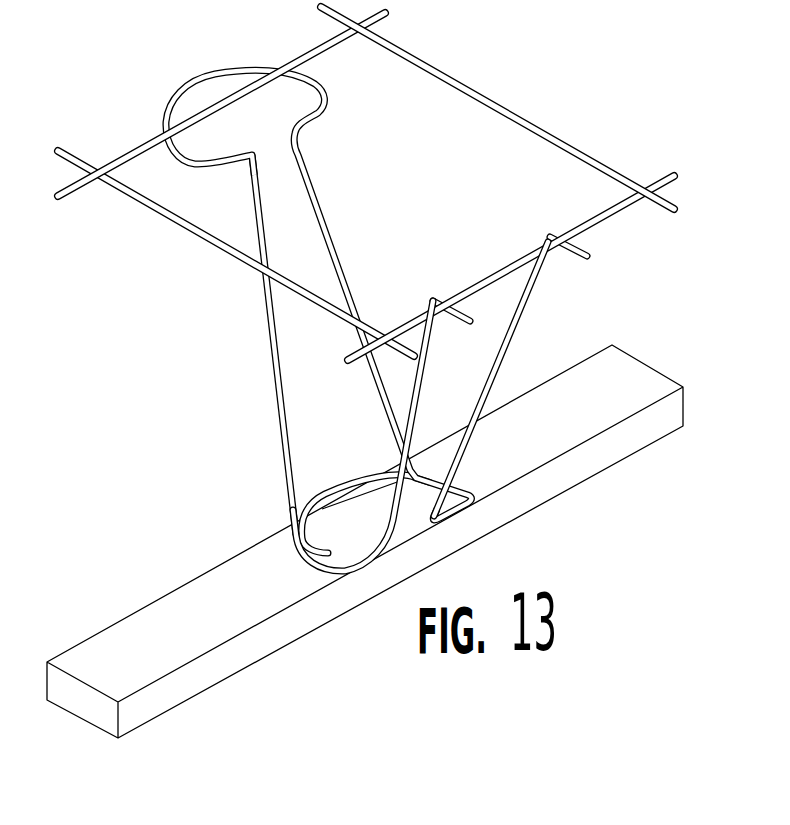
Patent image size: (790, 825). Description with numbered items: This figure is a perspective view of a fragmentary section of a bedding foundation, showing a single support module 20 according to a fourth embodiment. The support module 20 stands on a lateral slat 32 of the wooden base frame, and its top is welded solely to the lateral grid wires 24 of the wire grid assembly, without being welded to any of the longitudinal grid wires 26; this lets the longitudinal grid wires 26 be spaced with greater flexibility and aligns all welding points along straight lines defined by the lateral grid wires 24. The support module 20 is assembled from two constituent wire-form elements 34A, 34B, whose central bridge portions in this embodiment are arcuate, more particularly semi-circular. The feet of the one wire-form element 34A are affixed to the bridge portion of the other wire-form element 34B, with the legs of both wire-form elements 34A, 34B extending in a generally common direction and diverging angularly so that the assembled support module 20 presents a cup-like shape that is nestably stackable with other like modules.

The support module 20 is at (355, 311).
The lateral grid wire 24 is at (613, 212).
The longitudinal grid wire 26 is at (552, 134).
The lateral slat 32 is at (211, 630).
The wire-form element 34A is at (249, 317).
The wire-form element 34B is at (548, 306).